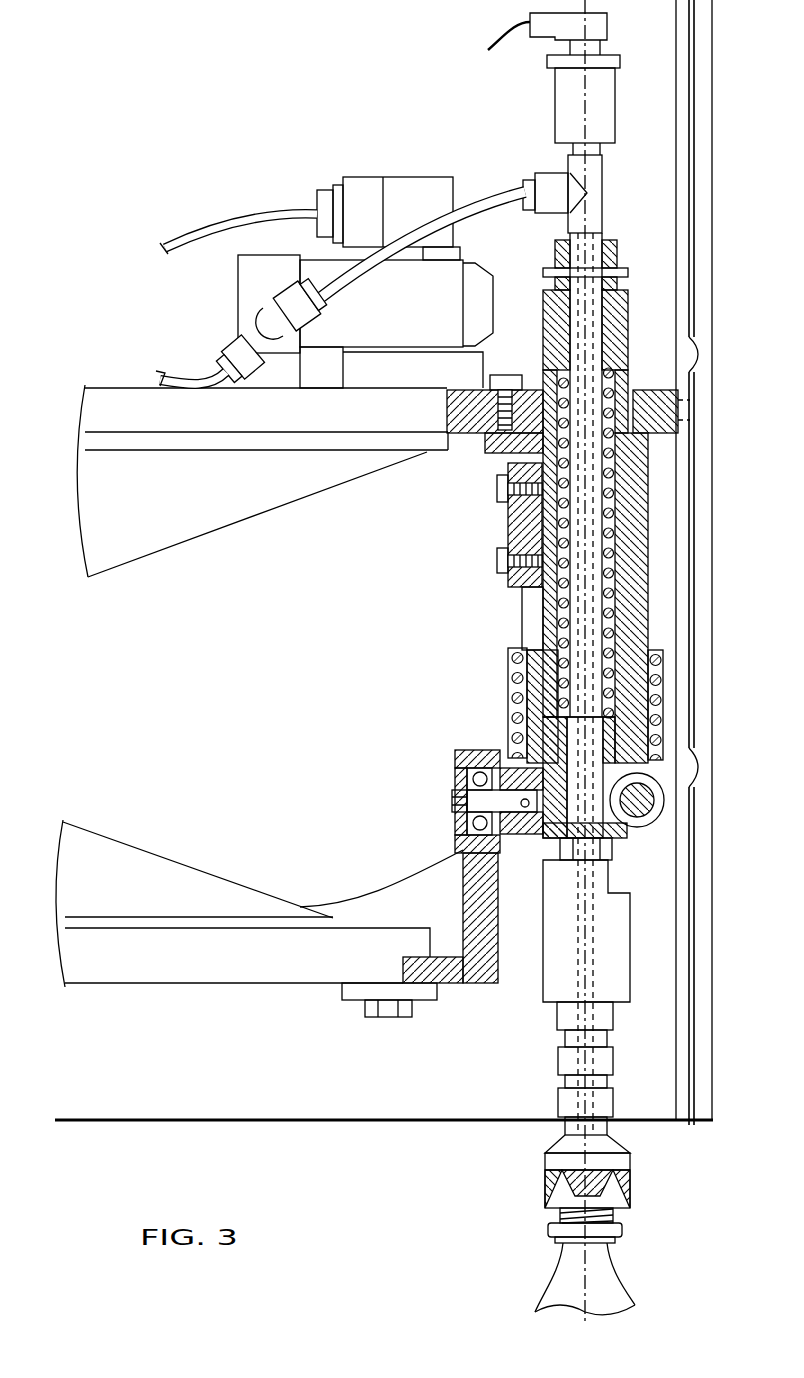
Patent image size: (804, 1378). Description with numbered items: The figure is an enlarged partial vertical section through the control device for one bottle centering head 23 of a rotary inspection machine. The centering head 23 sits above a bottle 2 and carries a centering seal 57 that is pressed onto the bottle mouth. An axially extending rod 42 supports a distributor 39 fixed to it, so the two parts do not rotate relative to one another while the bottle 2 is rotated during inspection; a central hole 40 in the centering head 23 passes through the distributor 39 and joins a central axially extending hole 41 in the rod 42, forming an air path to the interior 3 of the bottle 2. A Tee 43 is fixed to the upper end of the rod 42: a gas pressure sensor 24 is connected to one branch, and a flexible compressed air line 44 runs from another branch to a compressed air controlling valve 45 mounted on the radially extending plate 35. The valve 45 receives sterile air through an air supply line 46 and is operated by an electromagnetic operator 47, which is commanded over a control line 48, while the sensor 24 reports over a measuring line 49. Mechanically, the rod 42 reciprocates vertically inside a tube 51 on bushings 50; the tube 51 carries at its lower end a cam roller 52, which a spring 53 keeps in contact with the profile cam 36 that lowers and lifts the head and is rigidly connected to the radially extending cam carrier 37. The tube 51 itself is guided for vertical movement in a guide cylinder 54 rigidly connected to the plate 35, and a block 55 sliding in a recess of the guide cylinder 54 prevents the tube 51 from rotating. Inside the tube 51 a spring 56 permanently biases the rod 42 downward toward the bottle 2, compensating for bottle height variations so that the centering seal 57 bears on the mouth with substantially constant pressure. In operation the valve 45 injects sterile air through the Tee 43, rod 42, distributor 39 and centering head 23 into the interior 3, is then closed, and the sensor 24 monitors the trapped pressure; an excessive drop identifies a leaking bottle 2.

The bottle 2 is at (665, 1263).
The interior of bottle 3 is at (558, 1288).
The centering head 23 is at (625, 1160).
The gas pressure sensor 24 is at (600, 89).
The radially extending plate 35 is at (388, 420).
The profile cam 36 is at (405, 888).
The cam carrier 37 is at (257, 964).
The distributor 39 is at (622, 942).
The central hole 40 is at (567, 1102).
The central axially extending hole 41 is at (580, 618).
The rod 42 is at (595, 533).
The Tee 43 is at (595, 175).
The flexible compressed air line 44 is at (505, 195).
The compressed air controlling valve 45 is at (428, 317).
The air supply line 46 is at (188, 373).
The electromagnetic operator 47 is at (412, 197).
The control line 48 is at (247, 218).
The measuring line 49 is at (503, 38).
The bushings 50 is at (612, 315).
The tube 51 is at (625, 378).
The cam roller 52 is at (477, 752).
The spring 53 is at (658, 683).
The guide cylinder 54 is at (643, 484).
The block 55 is at (508, 524).
The spring 56 is at (610, 627).
The centering seal 57 is at (557, 1174).